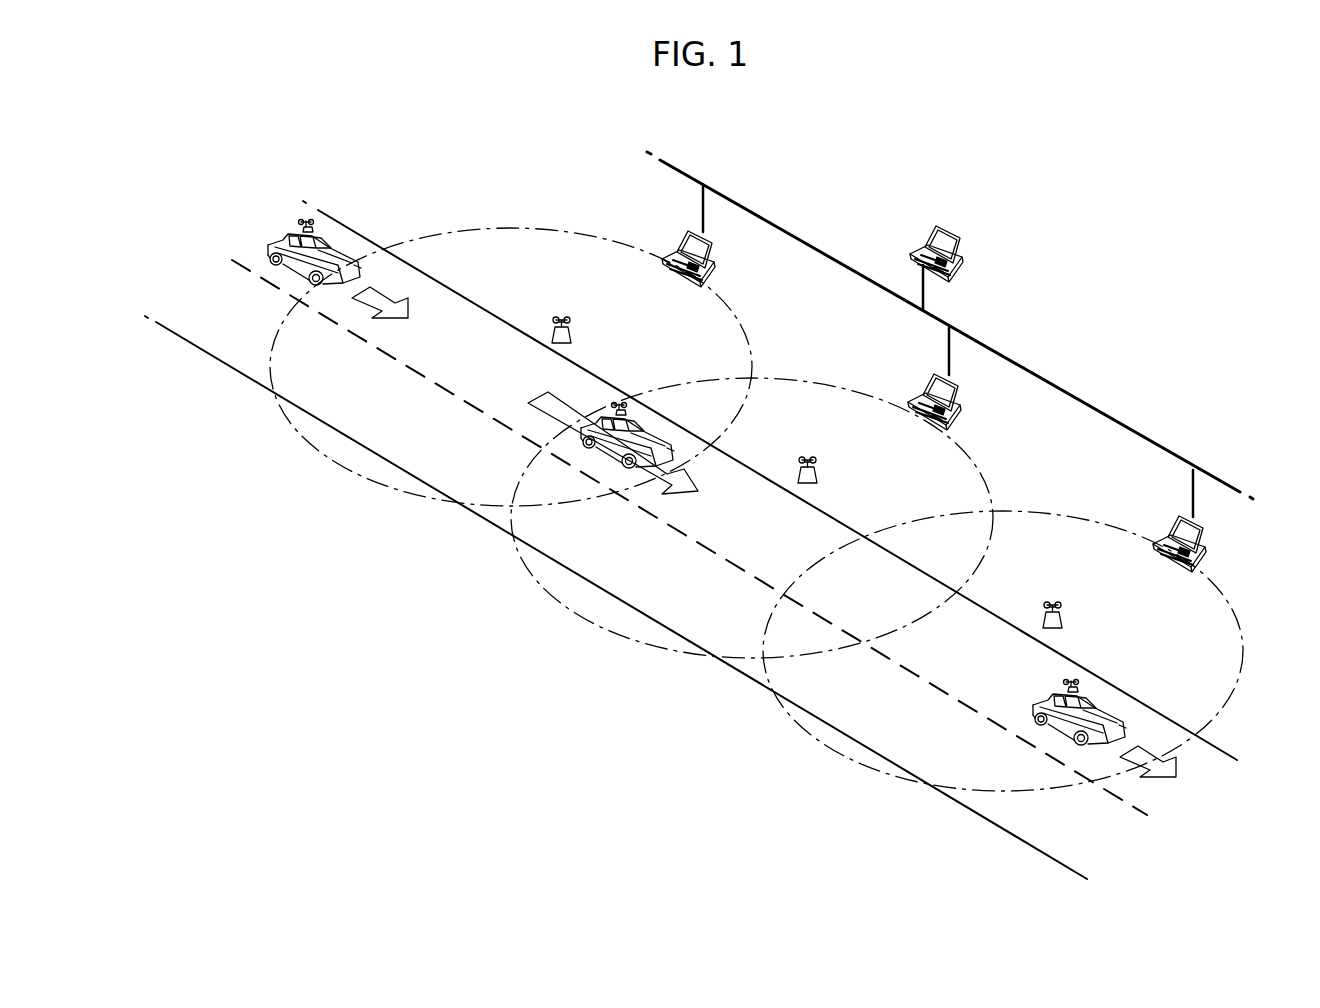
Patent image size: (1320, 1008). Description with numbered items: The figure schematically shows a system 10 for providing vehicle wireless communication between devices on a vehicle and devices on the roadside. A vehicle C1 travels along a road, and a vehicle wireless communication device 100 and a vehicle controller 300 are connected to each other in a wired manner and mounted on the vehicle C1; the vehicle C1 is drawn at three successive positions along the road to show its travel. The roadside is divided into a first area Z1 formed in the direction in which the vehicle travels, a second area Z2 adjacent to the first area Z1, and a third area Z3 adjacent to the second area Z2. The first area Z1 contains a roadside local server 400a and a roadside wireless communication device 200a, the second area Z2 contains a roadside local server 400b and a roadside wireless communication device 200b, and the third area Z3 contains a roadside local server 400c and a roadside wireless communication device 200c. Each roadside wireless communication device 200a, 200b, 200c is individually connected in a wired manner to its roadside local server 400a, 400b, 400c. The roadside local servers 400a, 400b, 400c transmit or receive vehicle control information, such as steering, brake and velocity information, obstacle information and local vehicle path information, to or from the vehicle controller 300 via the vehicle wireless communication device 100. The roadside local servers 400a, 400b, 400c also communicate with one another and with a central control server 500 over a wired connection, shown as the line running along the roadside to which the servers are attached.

The system for providing vehicle wireless communication 10 is at (1148, 164).
The vehicle wireless communication device 100 is at (300, 228).
The vehicle controller 300 is at (286, 227).
The roadside wireless communication device 200a is at (571, 334).
The roadside wireless communication device 200b is at (816, 474).
The roadside wireless communication device 200c is at (1062, 618).
The roadside local server 400a is at (713, 258).
The roadside local server 400b is at (963, 399).
The roadside local server 400c is at (1172, 521).
The central control server 500 is at (964, 252).
The first area Z1 is at (511, 362).
The second area Z2 is at (752, 512).
The third area Z3 is at (1003, 648).
The vehicle C1 is at (669, 463).